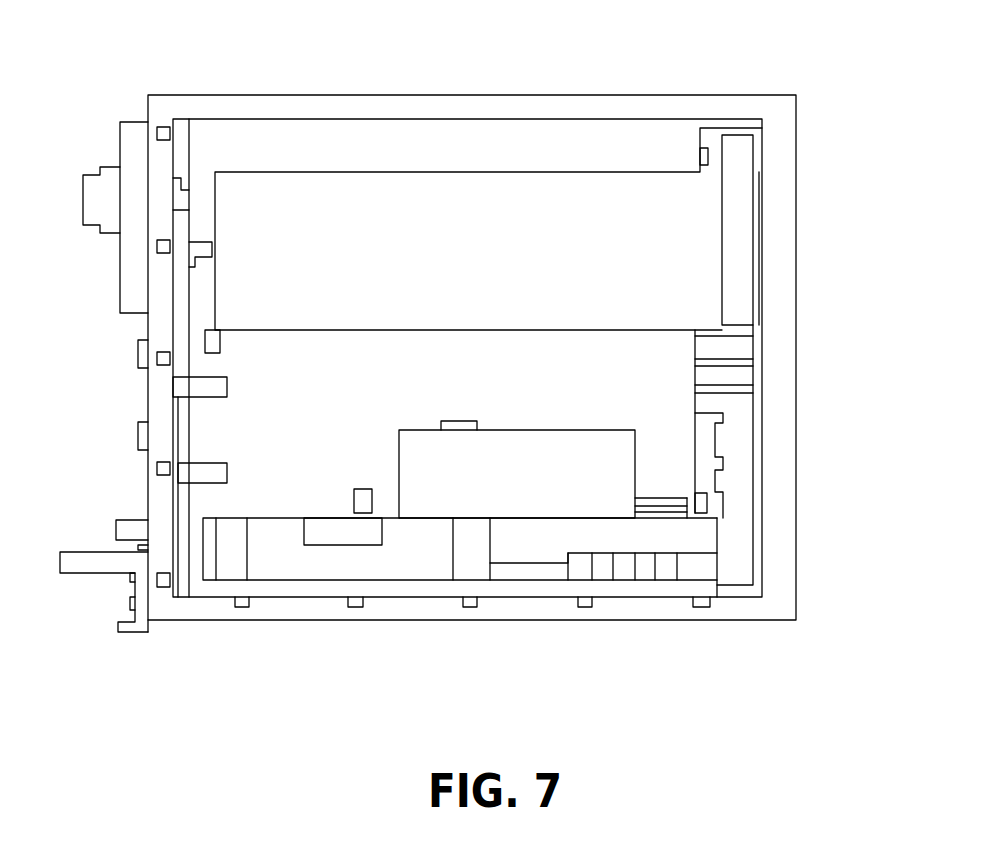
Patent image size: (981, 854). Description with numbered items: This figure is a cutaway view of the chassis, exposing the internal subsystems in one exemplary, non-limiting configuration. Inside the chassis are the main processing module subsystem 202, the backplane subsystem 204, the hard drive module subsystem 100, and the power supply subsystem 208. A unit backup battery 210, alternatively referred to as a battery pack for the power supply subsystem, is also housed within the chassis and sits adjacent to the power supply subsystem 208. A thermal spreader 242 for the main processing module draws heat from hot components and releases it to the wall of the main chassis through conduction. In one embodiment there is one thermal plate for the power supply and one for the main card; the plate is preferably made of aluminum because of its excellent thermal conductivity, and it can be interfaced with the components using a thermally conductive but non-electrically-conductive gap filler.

The hard drive module subsystem 100 is at (483, 230).
The main processing module subsystem 202 is at (728, 359).
The backplane subsystem 204 is at (762, 507).
The power supply subsystem 208 is at (347, 540).
The unit backup battery 210 is at (597, 465).
The thermal spreader 242 is at (700, 403).